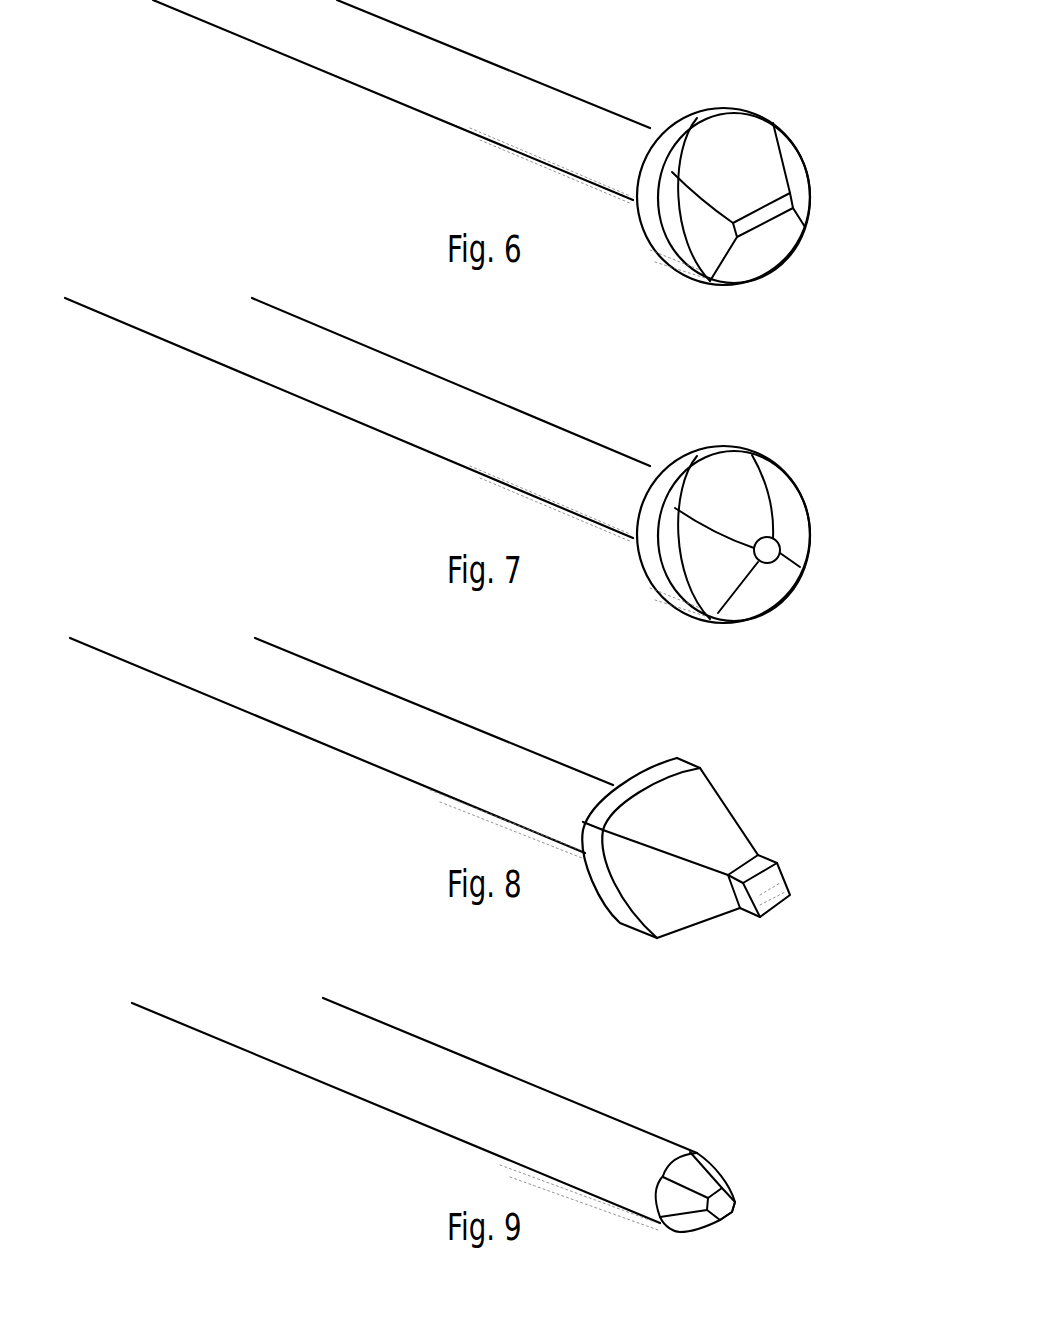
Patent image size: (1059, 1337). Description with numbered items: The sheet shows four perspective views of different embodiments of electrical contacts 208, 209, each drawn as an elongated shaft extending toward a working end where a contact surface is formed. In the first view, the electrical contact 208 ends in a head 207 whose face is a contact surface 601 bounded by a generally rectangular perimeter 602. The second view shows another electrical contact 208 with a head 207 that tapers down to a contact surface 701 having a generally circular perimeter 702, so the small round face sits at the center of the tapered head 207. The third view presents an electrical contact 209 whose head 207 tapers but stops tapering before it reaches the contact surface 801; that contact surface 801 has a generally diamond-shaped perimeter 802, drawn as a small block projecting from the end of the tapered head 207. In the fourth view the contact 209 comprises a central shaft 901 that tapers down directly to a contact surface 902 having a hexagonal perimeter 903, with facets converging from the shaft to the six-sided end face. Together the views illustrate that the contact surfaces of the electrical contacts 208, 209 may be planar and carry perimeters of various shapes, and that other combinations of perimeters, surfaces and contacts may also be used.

In FIG. 6, the head 207 is at (791, 149).
In FIG. 7, the head 207 is at (379, 491).
In FIG. 8, the head 207 is at (351, 818).
In FIG. 6, the electrical contact 208 is at (401, 102).
In FIG. 7, the electrical contact 208 is at (740, 463).
In FIG. 8, the electrical contact 209 is at (678, 804).
In FIG. 9, the electrical contact 209 is at (770, 1116).
In FIG. 6, the contact surface 601 is at (846, 247).
In FIG. 6, the generally rectangular perimeter 602 is at (808, 202).
In FIG. 7, the contact surface 701 is at (791, 538).
In FIG. 7, the generally circular perimeter 702 is at (830, 522).
In FIG. 8, the contact surface 801 is at (810, 886).
In FIG. 8, the generally diamond-shaped perimeter 802 is at (747, 853).
In FIG. 9, the central shaft 901 is at (412, 1114).
In FIG. 9, the contact surface 902 is at (778, 1224).
In FIG. 9, the hexagonal perimeter 903 is at (742, 1179).